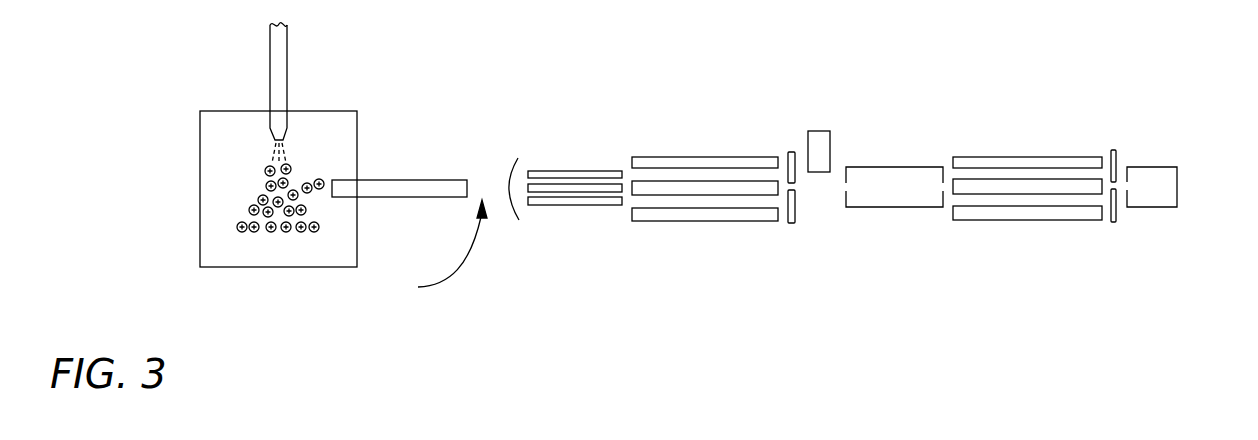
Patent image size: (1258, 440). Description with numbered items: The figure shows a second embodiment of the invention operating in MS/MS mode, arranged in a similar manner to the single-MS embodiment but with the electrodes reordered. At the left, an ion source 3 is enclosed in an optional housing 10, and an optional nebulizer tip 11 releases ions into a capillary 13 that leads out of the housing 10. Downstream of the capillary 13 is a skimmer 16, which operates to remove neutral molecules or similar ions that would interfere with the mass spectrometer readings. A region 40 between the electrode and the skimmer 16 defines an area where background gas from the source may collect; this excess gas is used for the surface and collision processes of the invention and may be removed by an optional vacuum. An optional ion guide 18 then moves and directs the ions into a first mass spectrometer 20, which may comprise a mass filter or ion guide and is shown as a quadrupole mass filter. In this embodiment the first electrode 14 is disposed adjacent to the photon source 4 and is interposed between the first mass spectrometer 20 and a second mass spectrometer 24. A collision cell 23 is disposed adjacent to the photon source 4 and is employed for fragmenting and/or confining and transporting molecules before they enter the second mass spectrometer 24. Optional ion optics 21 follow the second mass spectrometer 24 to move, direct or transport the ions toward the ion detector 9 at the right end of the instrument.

The ion source 3 is at (238, 169).
The photon source 4 is at (820, 131).
The ion detector 9 is at (1165, 167).
The housing 10 is at (278, 268).
The nebulizer tip 11 is at (270, 47).
The capillary 13 is at (400, 180).
The first electrode 14 is at (790, 224).
The skimmer 16 is at (513, 209).
The ion guide 18 is at (578, 171).
The first mass spectrometer 20 is at (705, 157).
The ion optics 21 is at (1113, 150).
The collision cell 23 is at (893, 207).
The second mass spectrometer 24 is at (1030, 157).
The region between the first electrode and the skimmer 40 is at (433, 252).